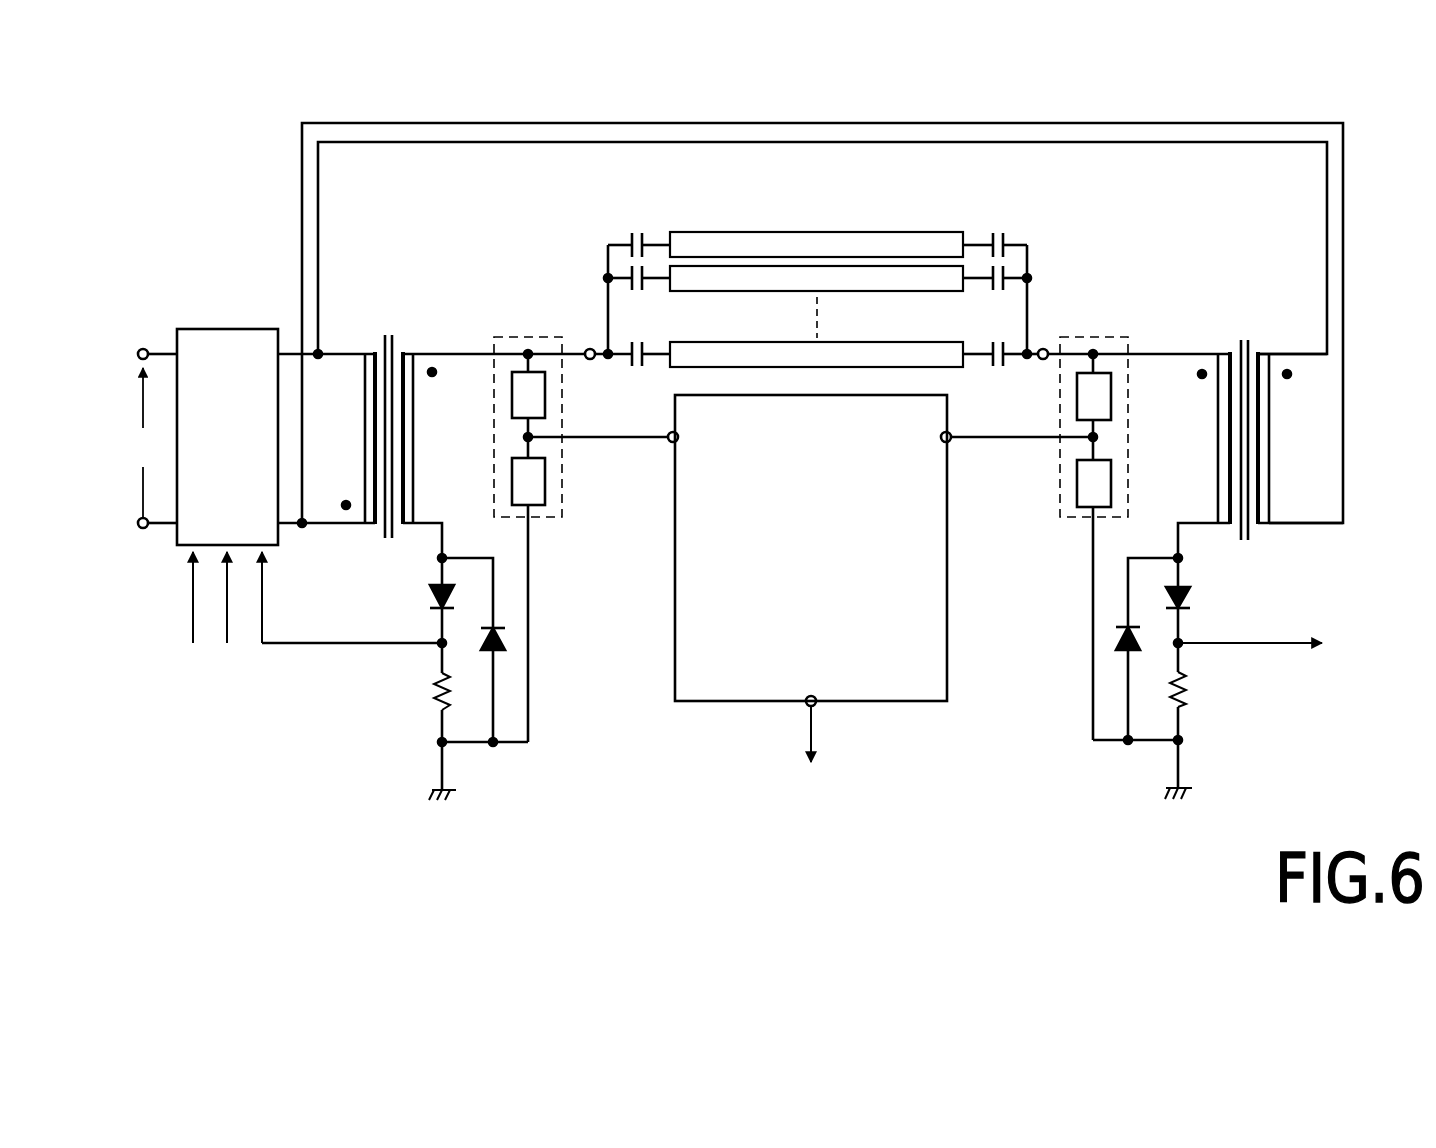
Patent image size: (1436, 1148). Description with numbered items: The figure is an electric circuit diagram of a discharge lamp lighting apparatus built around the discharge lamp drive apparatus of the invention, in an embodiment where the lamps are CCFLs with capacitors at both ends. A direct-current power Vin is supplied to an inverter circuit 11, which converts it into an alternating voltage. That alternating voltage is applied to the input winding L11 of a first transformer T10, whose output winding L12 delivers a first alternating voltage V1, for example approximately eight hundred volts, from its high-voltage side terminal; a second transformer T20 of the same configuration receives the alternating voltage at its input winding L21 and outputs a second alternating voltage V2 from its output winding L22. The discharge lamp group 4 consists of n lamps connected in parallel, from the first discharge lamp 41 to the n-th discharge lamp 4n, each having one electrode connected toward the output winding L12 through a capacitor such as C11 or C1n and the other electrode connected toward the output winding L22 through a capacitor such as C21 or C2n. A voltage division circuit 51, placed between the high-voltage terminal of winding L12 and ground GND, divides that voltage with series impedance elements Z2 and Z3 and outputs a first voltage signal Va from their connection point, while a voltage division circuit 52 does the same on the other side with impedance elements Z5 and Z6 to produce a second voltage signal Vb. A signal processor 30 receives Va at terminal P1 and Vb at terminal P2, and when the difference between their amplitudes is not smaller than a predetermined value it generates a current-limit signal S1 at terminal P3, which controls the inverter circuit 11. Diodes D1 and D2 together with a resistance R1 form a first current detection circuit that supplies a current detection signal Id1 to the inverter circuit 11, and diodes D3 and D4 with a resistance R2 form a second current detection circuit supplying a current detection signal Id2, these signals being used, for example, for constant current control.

The inverter circuit 11 is at (221, 329).
The first transformer T10 is at (429, 407).
The input winding L11 is at (366, 352).
The output winding L12 is at (413, 352).
The first alternating voltage V1 is at (483, 352).
The voltage division circuit 51 is at (503, 521).
The impedance element Z2 is at (512, 388).
The impedance element Z3 is at (512, 477).
The discharge lamp group 4 is at (809, 286).
The discharge lamp 4n is at (777, 232).
The discharge lamp 41 is at (777, 342).
The capacitor C1n is at (636, 233).
The capacitor C11 is at (635, 368).
The capacitor C2n is at (995, 233).
The capacitor C21 is at (998, 368).
The second alternating voltage V2 is at (1148, 352).
The signal processor 30 is at (810, 571).
The first input terminal of control circuit P1 is at (667, 444).
The second input terminal of control circuit P2 is at (952, 444).
The output terminal of control circuit P3 is at (802, 712).
The first voltage signal Va is at (630, 436).
The second voltage signal Vb is at (1020, 436).
The voltage division circuit 52 is at (1117, 520).
The impedance element Z5 is at (1111, 390).
The impedance element Z6 is at (1111, 478).
The second transformer T20 is at (1218, 412).
The output winding L22 is at (1220, 352).
The input winding L21 is at (1268, 352).
The diode D1 is at (432, 598).
The diode D2 is at (507, 632).
The diode D3 is at (1192, 598).
The diode D4 is at (1113, 636).
The resistance R1 is at (436, 688).
The resistance R2 is at (1190, 690).
The ground GND is at (432, 792).
The current-limit signal S1 is at (192, 602).
The current detection signal Id1 is at (263, 597).
The current detection signal Id2 is at (227, 637).
The direct-current power Vin is at (155, 438).